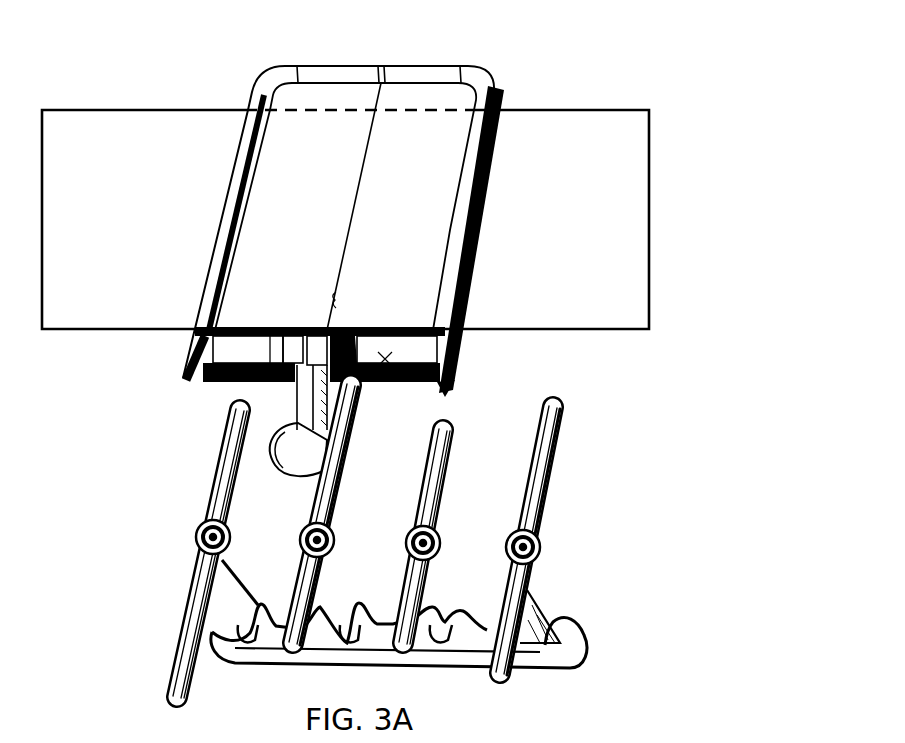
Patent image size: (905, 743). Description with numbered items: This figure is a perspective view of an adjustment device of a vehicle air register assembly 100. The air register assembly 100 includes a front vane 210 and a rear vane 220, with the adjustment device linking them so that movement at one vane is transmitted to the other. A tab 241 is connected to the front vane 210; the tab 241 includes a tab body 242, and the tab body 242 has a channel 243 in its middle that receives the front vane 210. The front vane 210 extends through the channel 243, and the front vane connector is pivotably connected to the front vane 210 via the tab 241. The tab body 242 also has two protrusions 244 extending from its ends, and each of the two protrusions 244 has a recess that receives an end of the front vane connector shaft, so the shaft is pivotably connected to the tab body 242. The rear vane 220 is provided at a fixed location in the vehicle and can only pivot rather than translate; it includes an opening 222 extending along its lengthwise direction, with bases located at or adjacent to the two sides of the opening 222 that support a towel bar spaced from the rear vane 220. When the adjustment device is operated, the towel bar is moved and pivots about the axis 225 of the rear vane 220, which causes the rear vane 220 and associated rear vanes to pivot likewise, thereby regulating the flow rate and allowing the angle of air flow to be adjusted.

The vehicle air register assembly 100 is at (690, 131).
The front vane 210 is at (600, 307).
The rear vane 220 is at (173, 667).
The opening 222 is at (588, 623).
The axis 225 is at (530, 553).
The tab 241 is at (472, 253).
The tab body 242 is at (447, 197).
The channel 243 is at (478, 112).
The protrusions 244 is at (450, 370).